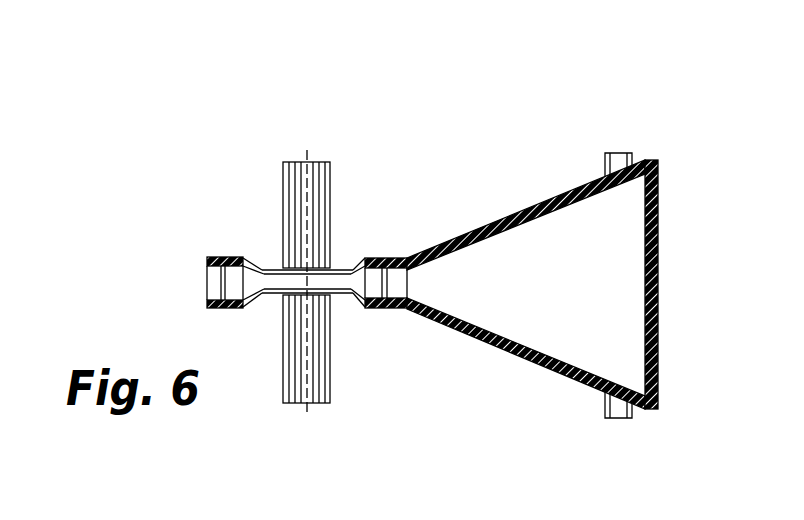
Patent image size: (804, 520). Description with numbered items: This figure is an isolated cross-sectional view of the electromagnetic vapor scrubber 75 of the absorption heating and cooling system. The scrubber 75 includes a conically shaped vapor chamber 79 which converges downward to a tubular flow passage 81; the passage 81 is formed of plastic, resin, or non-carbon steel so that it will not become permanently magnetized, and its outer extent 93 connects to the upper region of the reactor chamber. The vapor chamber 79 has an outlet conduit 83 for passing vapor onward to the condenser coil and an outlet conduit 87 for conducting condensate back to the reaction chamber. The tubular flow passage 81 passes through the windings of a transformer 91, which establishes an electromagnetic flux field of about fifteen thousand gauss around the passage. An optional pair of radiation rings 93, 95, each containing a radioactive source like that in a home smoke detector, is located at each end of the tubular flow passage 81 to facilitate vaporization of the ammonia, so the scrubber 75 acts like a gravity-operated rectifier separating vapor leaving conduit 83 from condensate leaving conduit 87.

The electromagnetic vapor scrubber 75 is at (360, 98).
The conically shaped vapor chamber 79 is at (507, 214).
The tubular flow passage 81 is at (333, 288).
The outlet conduit 83 is at (631, 153).
The outlet conduit 87 is at (628, 419).
The transformer 91 is at (322, 162).
The radiation ring 93 is at (222, 257).
The radiation ring 95 is at (382, 258).